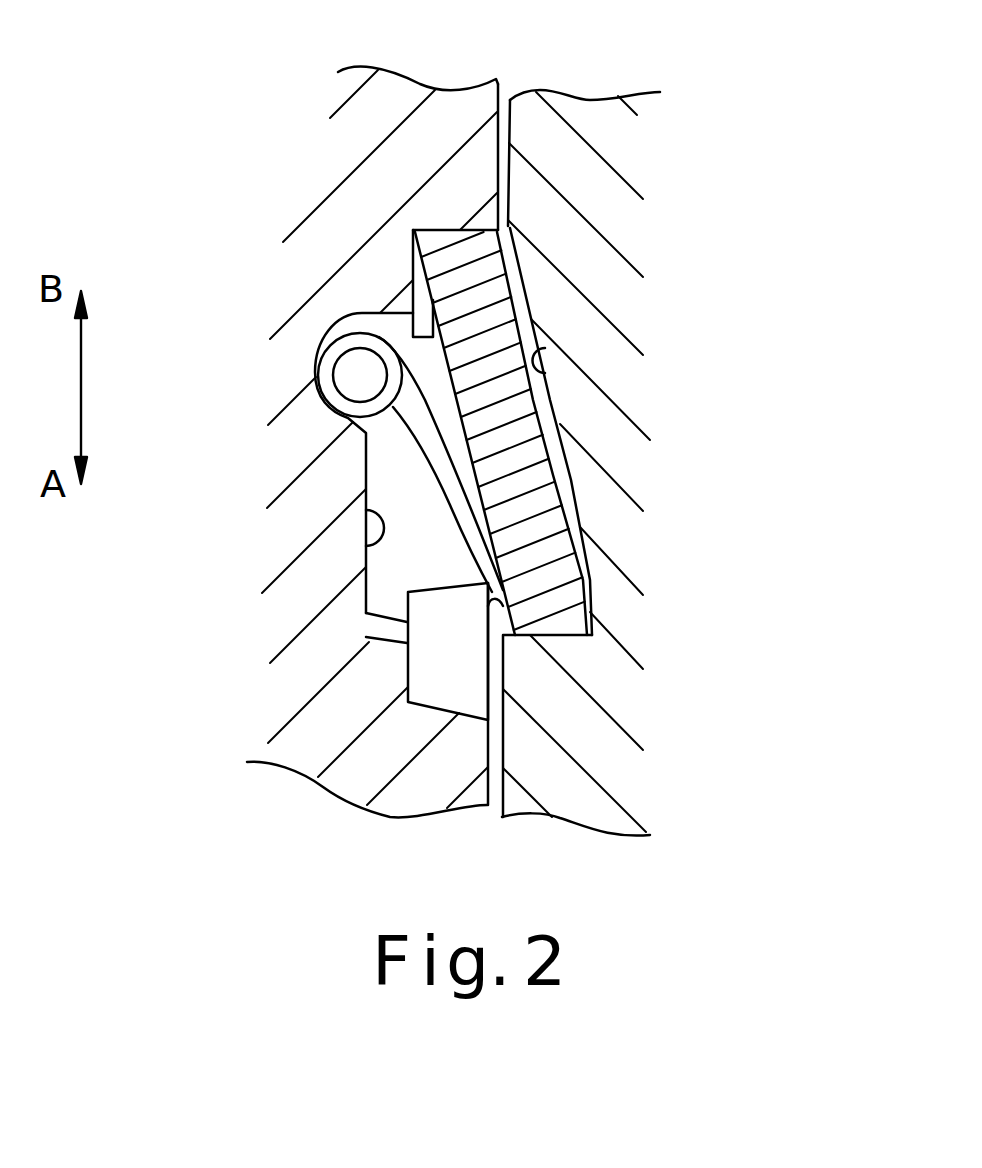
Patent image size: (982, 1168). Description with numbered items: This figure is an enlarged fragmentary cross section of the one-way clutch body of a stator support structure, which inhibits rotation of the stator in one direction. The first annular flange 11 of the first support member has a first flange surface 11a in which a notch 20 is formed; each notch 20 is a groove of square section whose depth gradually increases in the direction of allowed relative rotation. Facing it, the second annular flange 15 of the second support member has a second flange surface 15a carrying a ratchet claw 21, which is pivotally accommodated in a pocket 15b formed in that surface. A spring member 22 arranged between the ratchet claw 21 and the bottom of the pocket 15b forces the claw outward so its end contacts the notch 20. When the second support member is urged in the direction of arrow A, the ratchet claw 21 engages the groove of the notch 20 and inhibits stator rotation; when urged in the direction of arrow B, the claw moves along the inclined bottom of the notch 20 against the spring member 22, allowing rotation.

The first annular flange 11 is at (555, 137).
The first flange surface 11a is at (500, 167).
The second annular flange 15 is at (430, 790).
The second flange surface 15a is at (489, 739).
The pocket 15b is at (372, 543).
The notch 20 is at (548, 362).
The ratchet claw 21 is at (547, 492).
The spring member 22 is at (367, 443).